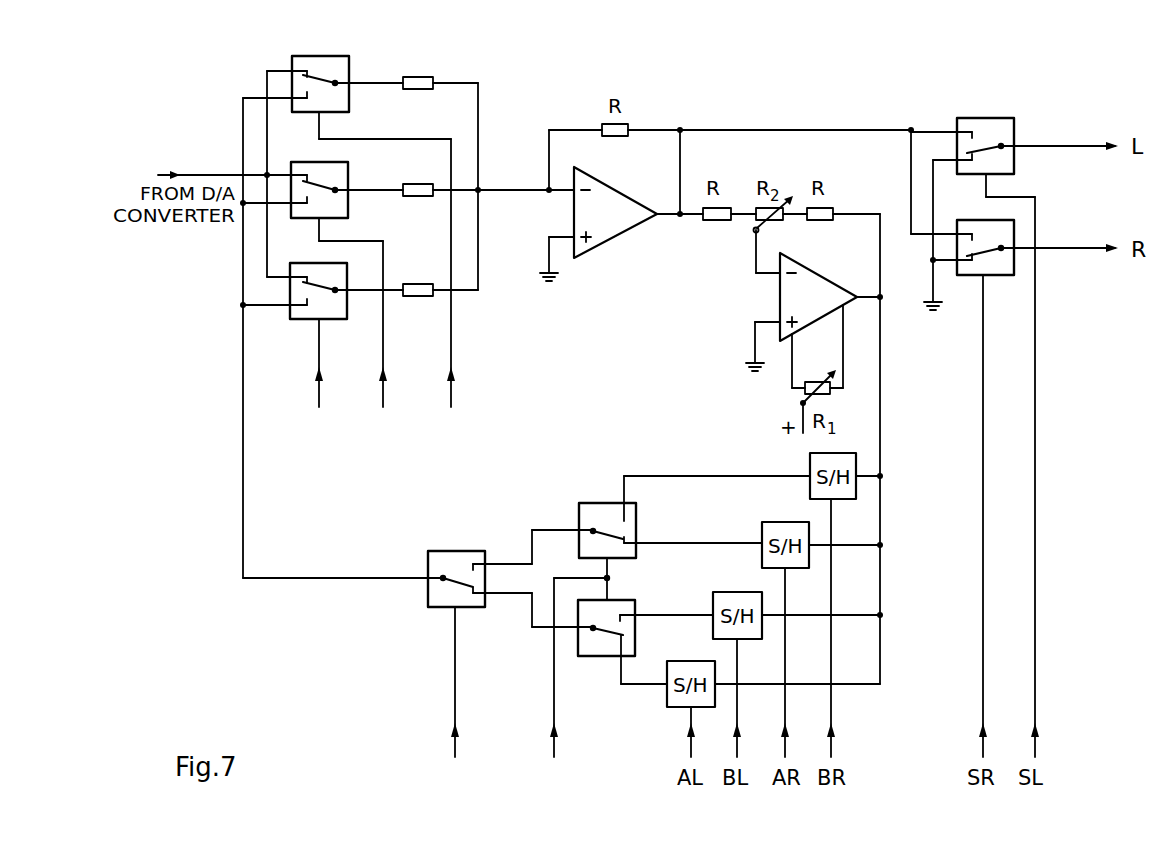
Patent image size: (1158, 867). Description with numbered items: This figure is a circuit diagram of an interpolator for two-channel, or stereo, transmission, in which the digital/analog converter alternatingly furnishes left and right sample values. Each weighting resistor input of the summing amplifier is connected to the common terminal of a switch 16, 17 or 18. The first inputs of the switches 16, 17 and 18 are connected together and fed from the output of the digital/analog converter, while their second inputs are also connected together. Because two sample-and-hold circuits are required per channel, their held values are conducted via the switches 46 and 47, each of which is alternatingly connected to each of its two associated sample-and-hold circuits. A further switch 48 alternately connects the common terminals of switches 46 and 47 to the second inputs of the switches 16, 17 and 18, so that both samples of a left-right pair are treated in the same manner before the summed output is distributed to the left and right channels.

The switch 16 is at (339, 57).
The switch 17 is at (321, 163).
The switch 18 is at (321, 264).
The switch 46 is at (613, 504).
The switch 47 is at (588, 648).
The further switch 48 is at (440, 552).